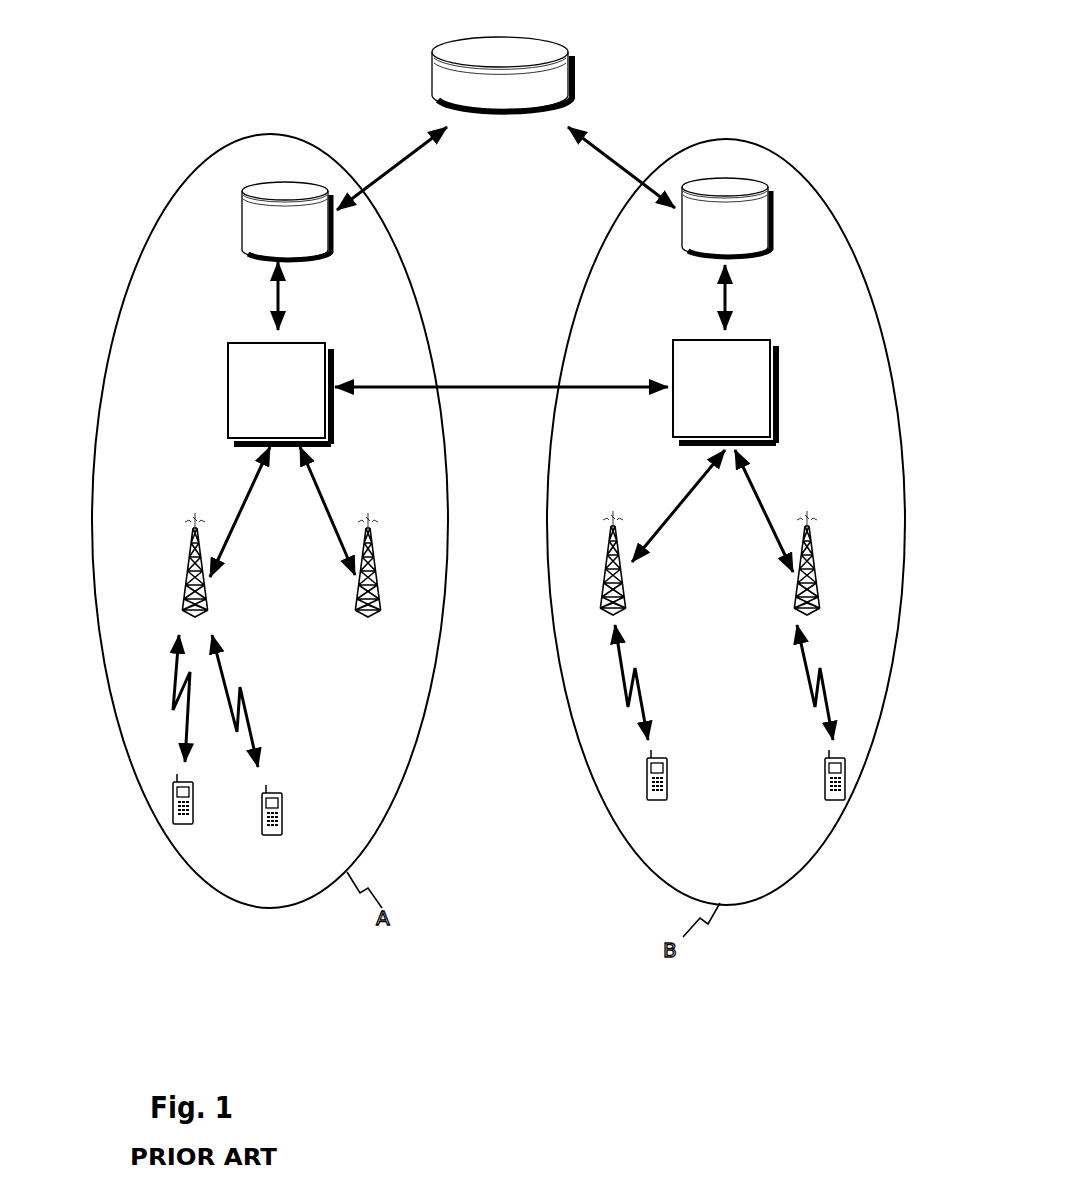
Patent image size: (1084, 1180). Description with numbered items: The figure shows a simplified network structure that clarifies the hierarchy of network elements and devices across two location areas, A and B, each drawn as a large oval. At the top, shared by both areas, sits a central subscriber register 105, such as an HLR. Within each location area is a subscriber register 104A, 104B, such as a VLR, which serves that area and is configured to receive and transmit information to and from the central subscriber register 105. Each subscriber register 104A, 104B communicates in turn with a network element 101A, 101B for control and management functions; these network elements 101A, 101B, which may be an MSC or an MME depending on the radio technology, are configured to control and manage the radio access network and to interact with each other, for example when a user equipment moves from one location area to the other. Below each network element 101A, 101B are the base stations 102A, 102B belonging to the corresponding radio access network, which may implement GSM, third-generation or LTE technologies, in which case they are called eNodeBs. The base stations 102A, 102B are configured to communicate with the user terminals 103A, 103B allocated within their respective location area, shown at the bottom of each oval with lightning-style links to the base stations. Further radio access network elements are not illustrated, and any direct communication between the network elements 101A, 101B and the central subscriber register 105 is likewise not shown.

The central subscriber register 105 is at (432, 62).
The subscriber register 104A is at (243, 190).
The subscriber register 104B is at (752, 177).
The network element 101A is at (228, 343).
The network element 101B is at (777, 343).
The base stations 102A is at (188, 570).
The base stations 102B is at (606, 568).
The user terminals 103A is at (176, 826).
The user terminals 103B is at (648, 801).